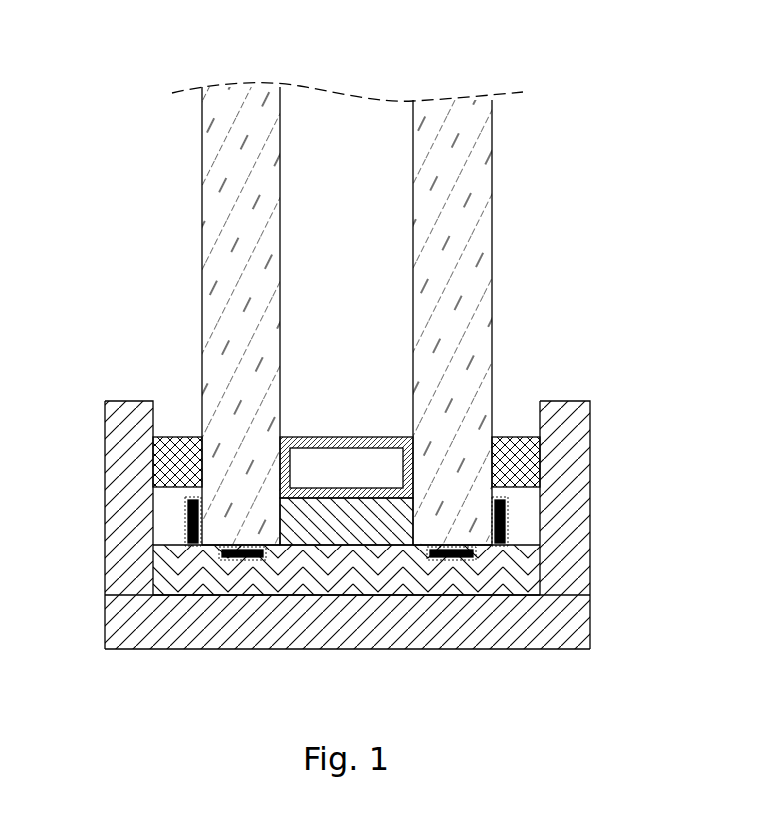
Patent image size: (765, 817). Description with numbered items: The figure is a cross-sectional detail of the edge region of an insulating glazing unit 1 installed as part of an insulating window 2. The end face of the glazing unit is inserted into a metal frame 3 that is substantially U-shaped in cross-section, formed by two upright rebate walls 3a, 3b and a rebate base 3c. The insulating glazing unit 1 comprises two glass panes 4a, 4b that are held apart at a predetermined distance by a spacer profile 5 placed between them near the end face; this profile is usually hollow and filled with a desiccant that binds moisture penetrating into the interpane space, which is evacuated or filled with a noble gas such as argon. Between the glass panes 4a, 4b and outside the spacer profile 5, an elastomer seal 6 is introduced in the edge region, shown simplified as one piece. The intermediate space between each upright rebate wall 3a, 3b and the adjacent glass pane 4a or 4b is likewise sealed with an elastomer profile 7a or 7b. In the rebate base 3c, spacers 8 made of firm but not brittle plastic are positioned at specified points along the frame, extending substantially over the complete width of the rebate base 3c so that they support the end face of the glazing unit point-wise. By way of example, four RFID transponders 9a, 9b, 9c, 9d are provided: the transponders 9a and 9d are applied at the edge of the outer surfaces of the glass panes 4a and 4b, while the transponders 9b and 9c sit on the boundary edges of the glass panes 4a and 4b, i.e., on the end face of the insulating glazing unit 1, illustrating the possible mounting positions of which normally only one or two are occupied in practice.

The insulating glazing unit 1 is at (488, 77).
The insulating window 2 is at (549, 250).
The metal frame 3 is at (348, 511).
The upright rebate wall 3a is at (103, 465).
The upright rebate wall 3b is at (592, 463).
The rebate base 3c is at (278, 602).
The glass pane 4a is at (232, 190).
The glass pane 4b is at (462, 188).
The spacer profile 5 is at (346, 435).
The elastomer seal 6 is at (347, 522).
The elastomer profile 7a is at (178, 436).
The elastomer profile 7b is at (517, 436).
The spacers 8 is at (405, 572).
The RFID transponder 9a is at (185, 522).
The RFID transponder 9b is at (218, 556).
The RFID transponder 9c is at (476, 555).
The RFID transponder 9d is at (508, 522).